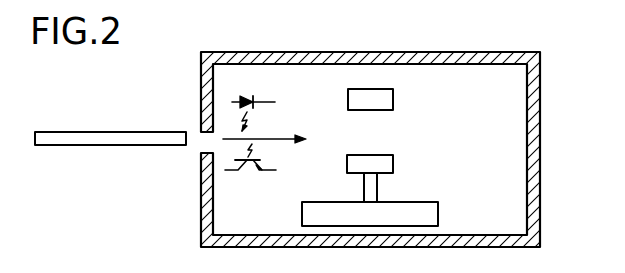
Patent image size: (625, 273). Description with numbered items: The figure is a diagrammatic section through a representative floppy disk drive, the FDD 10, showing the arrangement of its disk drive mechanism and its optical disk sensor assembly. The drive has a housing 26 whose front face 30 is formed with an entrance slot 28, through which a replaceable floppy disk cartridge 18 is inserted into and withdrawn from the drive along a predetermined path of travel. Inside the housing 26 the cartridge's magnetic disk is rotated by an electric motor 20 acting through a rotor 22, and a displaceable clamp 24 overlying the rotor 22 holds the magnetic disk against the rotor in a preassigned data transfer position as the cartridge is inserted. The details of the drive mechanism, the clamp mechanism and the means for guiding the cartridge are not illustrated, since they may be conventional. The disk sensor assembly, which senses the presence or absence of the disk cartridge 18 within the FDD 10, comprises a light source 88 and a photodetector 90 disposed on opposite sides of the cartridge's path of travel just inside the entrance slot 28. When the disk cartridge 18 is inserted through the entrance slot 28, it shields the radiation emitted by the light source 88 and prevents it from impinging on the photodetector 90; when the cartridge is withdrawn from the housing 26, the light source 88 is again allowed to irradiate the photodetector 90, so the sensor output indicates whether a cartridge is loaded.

The FDD 10 is at (545, 91).
The floppy disk cartridge 18 is at (88, 148).
The electric motor 20 is at (417, 202).
The rotor 22 is at (394, 155).
The clamp 24 is at (394, 89).
The housing 26 is at (541, 195).
The entrance slot 28 is at (194, 149).
The front face 30 is at (197, 205).
The light source 88 is at (257, 99).
The photodetector 90 is at (243, 172).